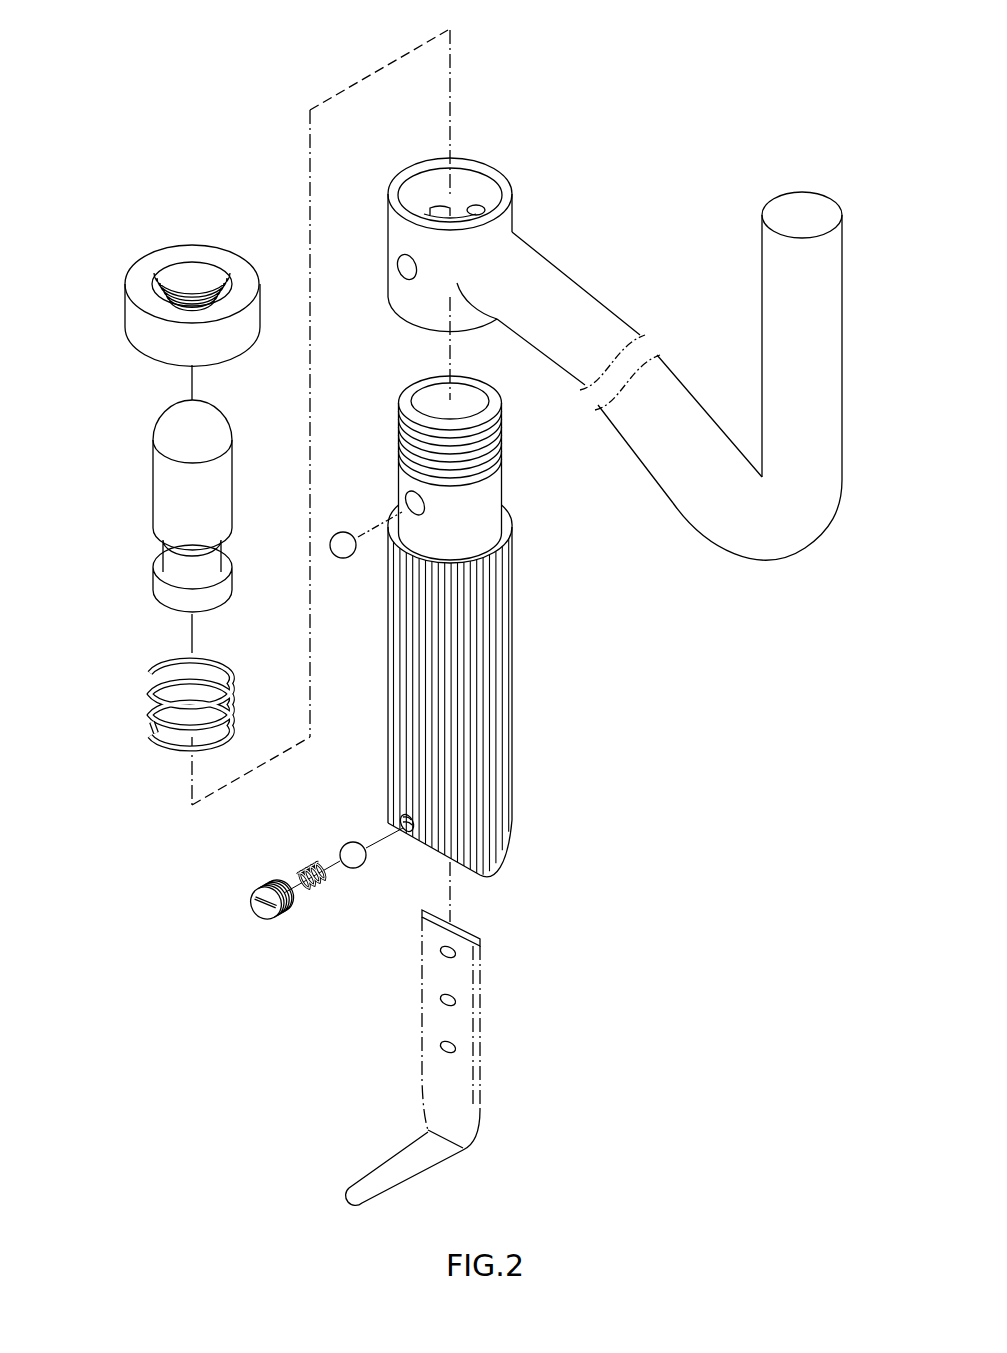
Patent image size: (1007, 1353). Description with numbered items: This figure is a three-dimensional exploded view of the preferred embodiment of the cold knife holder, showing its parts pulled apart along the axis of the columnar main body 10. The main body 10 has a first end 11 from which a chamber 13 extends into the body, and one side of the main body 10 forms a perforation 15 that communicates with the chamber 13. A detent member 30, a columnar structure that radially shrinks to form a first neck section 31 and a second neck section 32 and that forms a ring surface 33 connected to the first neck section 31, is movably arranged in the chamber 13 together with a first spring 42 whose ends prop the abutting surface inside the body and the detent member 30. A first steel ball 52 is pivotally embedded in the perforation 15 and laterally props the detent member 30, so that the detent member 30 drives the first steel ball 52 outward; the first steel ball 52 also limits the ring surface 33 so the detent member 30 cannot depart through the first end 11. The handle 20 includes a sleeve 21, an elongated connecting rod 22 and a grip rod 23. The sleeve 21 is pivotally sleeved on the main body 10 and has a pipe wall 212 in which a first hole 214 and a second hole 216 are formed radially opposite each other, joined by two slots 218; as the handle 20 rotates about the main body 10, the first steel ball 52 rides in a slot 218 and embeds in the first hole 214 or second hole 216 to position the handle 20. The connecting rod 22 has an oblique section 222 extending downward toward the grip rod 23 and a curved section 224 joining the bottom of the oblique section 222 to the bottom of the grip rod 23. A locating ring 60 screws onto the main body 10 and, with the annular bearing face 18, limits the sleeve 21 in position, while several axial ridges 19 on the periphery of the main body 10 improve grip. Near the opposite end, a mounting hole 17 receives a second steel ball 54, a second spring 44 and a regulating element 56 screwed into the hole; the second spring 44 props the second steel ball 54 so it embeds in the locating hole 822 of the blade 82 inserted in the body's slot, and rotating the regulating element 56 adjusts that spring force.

The main body 10 is at (485, 635).
The first end 11 is at (467, 445).
The chamber 13 is at (437, 408).
The perforation 15 is at (413, 502).
The mounting hole 17 is at (407, 833).
The bearing face 18 is at (512, 530).
The ridges 19 is at (512, 847).
The handle 20 is at (578, 343).
The sleeve 21 is at (462, 194).
The pipe wall 212 is at (470, 163).
The first hole 214 is at (393, 273).
The second hole 216 is at (470, 208).
The slots 218 is at (443, 212).
The connecting rod 22 is at (649, 422).
The oblique section 222 is at (675, 500).
The curved section 224 is at (762, 553).
The grip rod 23 is at (762, 293).
The detent member 30 is at (177, 506).
The first neck section 31 is at (160, 563).
The second neck section 32 is at (180, 543).
The ring surface 33 is at (228, 565).
The first spring 42 is at (150, 705).
The second spring 44 is at (307, 872).
The first steel ball 52 is at (342, 557).
The second steel ball 54 is at (345, 847).
The regulating element 56 is at (262, 892).
The locating ring 60 is at (154, 260).
The blade 82 is at (468, 1057).
The locating hole 822 is at (447, 1050).